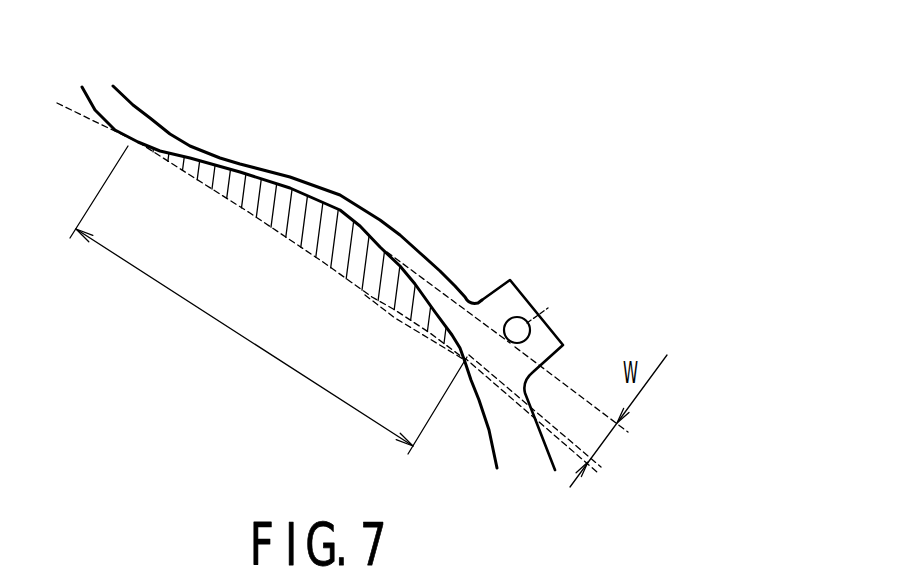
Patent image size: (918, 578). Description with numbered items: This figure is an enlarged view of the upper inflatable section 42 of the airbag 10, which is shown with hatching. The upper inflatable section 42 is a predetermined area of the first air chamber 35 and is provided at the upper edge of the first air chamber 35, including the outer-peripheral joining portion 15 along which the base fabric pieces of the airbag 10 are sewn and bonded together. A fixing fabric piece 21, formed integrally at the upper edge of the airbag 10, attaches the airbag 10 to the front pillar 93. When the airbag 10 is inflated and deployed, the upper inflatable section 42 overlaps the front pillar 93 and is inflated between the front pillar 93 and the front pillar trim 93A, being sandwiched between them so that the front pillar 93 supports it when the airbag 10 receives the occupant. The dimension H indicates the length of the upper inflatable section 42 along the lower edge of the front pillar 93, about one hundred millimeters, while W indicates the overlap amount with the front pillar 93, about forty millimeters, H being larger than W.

The airbag 10 is at (355, 278).
The outer-peripheral joining portion 15 is at (356, 200).
The fixing fabric piece 21 is at (532, 318).
The upper inflatable section 42 is at (313, 225).
The front pillar 93 is at (278, 153).
The front pillar trim 93A is at (228, 142).
The first air chamber 35 is at (330, 330).